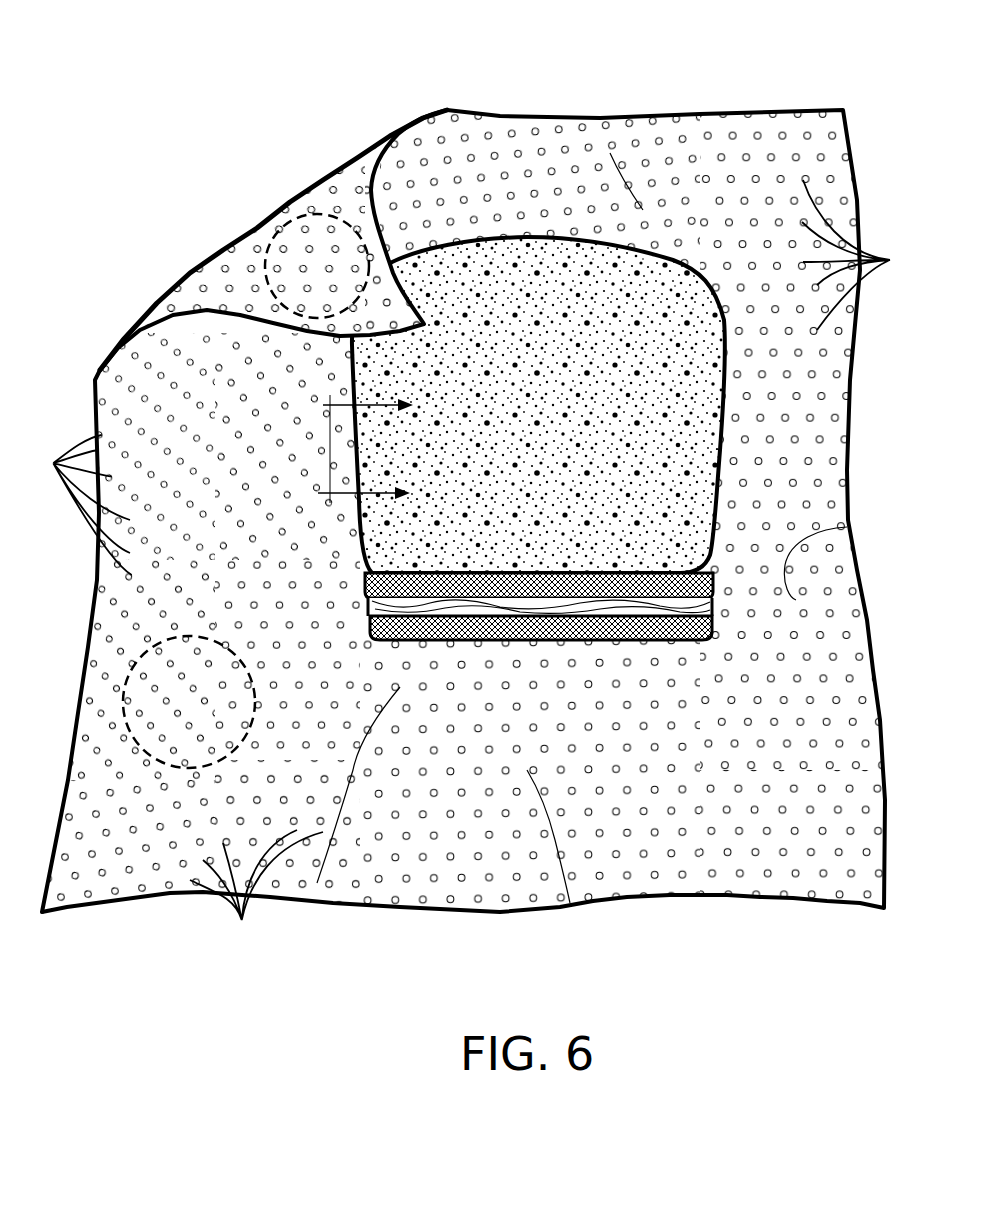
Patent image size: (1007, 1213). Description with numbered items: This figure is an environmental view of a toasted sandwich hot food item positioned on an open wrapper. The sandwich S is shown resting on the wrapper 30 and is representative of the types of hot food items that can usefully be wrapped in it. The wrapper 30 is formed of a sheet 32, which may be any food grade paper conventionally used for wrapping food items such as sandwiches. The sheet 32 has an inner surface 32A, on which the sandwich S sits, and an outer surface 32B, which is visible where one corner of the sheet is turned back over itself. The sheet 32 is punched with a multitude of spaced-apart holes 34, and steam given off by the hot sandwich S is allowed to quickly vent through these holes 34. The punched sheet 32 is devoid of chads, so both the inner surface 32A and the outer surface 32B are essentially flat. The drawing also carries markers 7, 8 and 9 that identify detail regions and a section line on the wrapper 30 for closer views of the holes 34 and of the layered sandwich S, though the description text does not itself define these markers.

The wrapper 30 is at (468, 72).
The sandwich S is at (590, 267).
The sheet 32 is at (753, 108).
The inner surface 32A is at (146, 395).
The outer surface 32B is at (213, 287).
The holes 34 is at (479, 569).
The detail region of FIG. 7 is at (277, 225).
The detail region of FIG. 8 is at (123, 697).
The section line 9- 9 is at (356, 449).